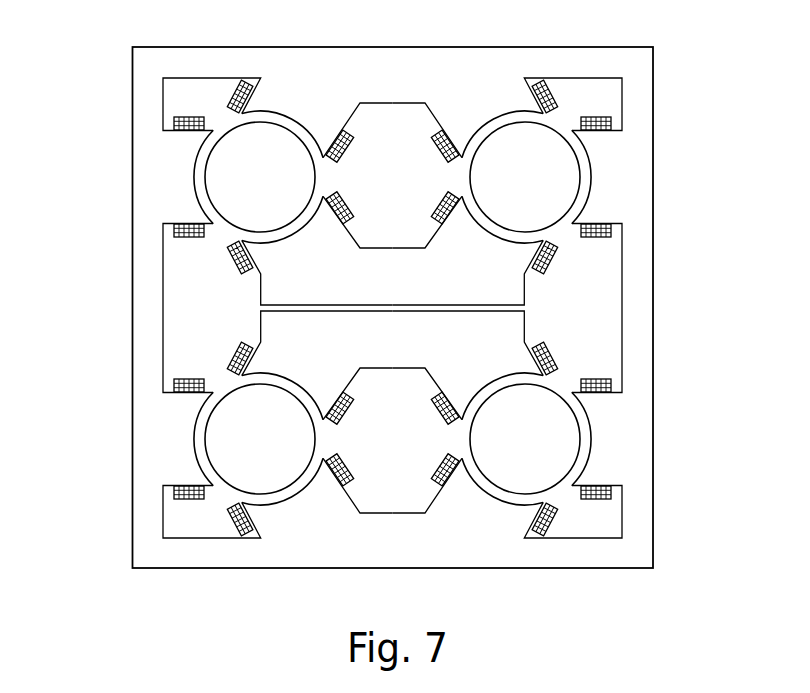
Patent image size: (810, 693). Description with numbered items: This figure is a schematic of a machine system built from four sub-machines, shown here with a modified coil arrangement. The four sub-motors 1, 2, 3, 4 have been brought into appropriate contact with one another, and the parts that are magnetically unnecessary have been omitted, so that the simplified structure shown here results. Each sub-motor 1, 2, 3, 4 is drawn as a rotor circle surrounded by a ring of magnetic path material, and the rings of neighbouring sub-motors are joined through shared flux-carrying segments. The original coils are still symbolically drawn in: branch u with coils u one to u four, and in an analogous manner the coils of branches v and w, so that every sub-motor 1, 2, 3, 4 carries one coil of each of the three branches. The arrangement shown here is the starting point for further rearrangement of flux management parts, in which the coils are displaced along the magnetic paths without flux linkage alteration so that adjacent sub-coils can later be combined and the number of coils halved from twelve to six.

The sub-motor 1 is at (663, 460).
The sub-motor 2 is at (663, 100).
The sub-motor 3 is at (122, 100).
The sub-motor 4 is at (122, 460).